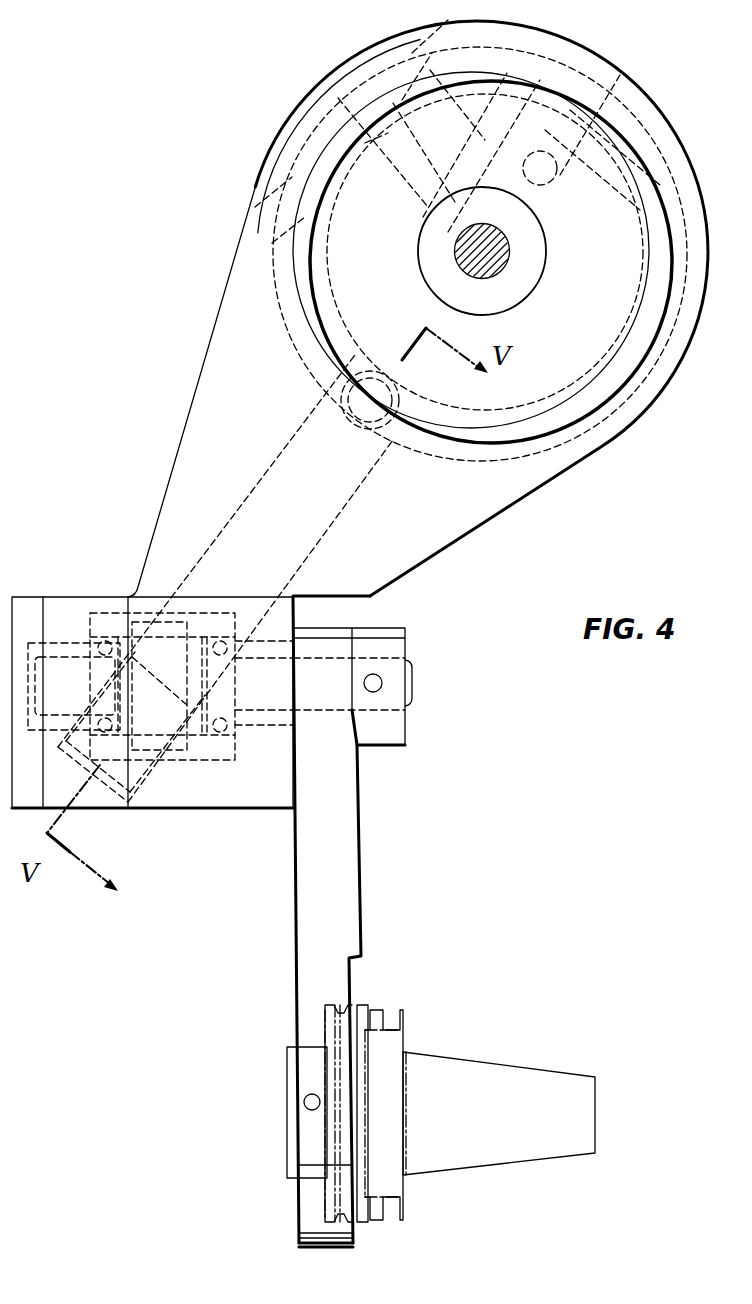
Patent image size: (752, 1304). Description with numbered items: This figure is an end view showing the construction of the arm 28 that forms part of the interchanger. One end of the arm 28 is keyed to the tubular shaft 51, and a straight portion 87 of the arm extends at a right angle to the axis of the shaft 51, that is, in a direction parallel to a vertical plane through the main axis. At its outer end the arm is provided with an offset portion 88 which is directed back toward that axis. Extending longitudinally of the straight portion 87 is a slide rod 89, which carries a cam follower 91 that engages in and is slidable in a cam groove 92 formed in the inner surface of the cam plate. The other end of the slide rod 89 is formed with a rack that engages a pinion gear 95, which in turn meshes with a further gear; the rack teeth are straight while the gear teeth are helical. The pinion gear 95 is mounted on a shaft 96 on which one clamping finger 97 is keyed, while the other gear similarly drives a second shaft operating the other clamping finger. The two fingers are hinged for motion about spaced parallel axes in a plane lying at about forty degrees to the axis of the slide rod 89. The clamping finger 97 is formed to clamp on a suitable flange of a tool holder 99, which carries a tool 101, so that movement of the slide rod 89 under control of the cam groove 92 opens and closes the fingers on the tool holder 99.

The arm 28 is at (433, 558).
The tubular shaft 51 is at (515, 283).
The straight portion 87 is at (347, 563).
The offset portion 88 is at (245, 795).
The slide rod 89 is at (395, 378).
The cam follower 91 is at (385, 435).
The cam groove 92 is at (305, 370).
The pinion gear 95 is at (203, 590).
The shaft 96 is at (332, 713).
The clamping finger 97 is at (307, 930).
The tool holder 99 is at (398, 1005).
The tool 101 is at (487, 1062).